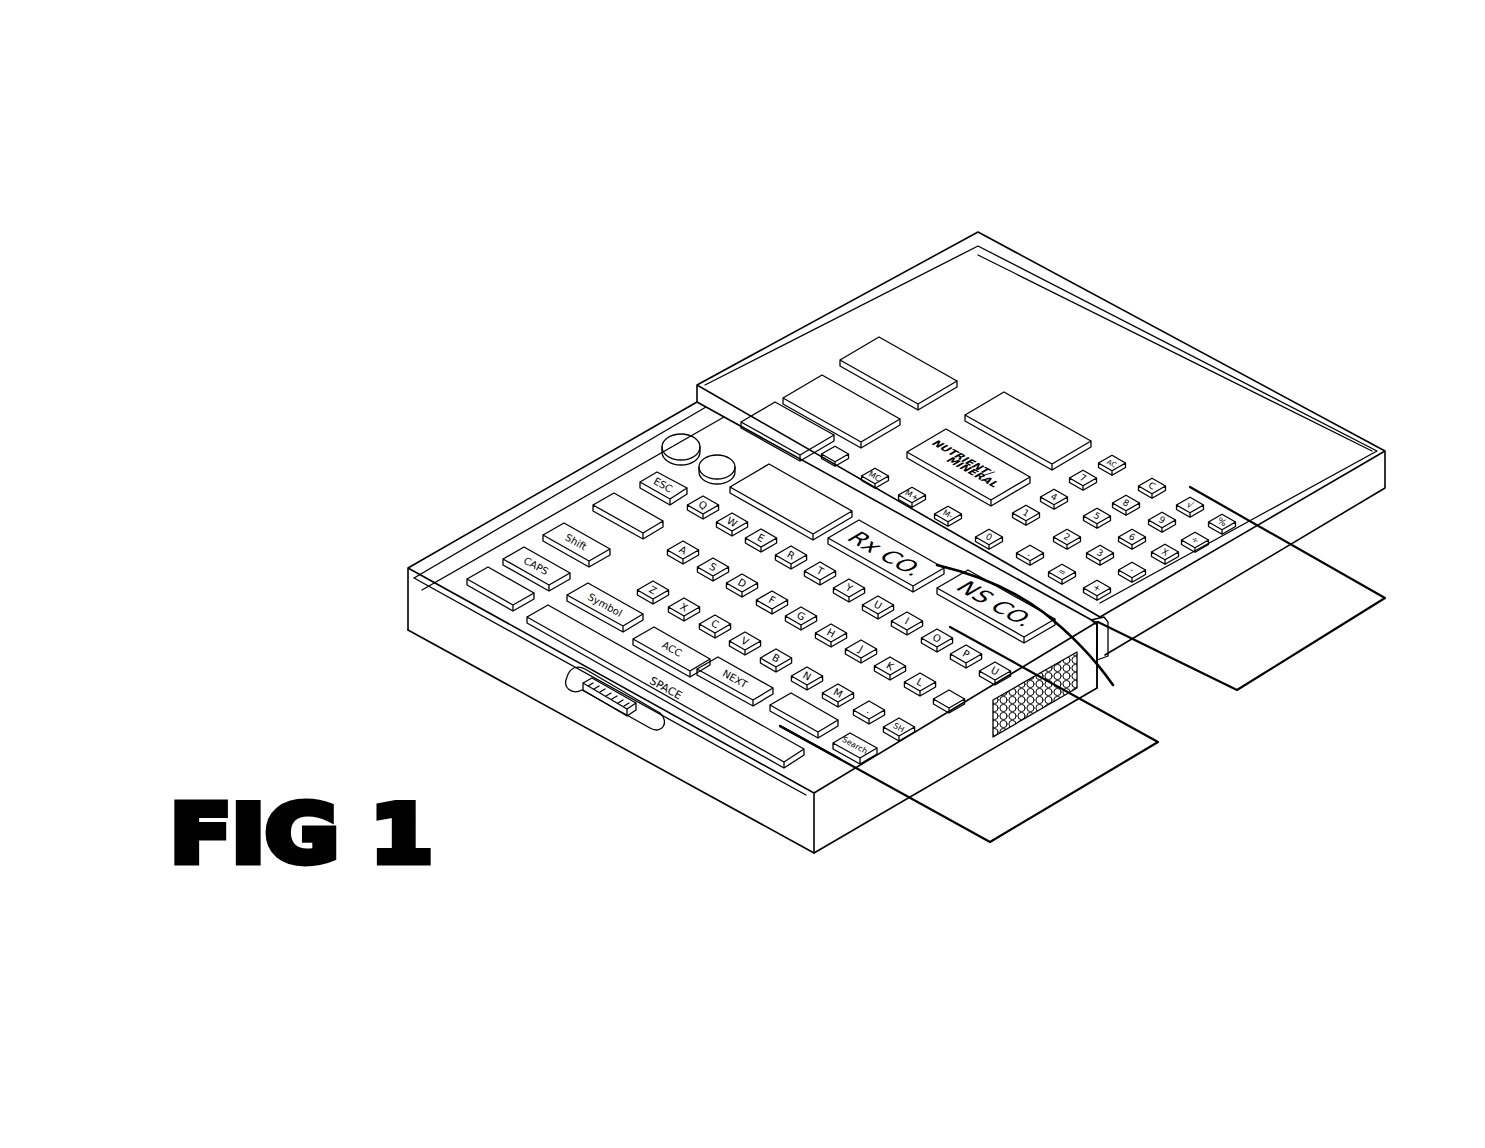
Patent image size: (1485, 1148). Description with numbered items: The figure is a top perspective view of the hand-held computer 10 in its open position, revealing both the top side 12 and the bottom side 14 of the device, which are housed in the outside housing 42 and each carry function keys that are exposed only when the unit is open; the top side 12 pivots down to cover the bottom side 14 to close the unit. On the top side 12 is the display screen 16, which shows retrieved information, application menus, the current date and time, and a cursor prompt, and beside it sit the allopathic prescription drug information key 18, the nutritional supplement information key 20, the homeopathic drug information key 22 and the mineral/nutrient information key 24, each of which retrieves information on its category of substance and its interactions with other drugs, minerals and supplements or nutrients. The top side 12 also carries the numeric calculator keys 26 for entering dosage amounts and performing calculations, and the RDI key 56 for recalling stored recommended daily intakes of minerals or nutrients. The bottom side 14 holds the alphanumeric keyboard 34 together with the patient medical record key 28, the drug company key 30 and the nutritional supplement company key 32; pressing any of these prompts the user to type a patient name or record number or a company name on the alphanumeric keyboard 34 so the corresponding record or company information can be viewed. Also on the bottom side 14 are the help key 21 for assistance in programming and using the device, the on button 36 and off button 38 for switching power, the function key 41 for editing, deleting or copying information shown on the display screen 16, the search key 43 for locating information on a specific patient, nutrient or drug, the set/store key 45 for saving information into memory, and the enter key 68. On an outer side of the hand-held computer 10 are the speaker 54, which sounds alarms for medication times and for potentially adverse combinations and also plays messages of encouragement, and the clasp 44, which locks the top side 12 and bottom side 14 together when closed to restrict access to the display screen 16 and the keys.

The hand-held computer 10 is at (638, 272).
The top side 12 is at (1295, 467).
The bottom side 14 is at (457, 575).
The display screen 16 is at (1243, 412).
The allopathic prescription drug information key 18 is at (863, 350).
The nutritional supplement information key 20 is at (1000, 410).
The help key 21 is at (483, 577).
The homeopathic drug information key 22 is at (813, 385).
The mineral/nutrient information key 24 is at (875, 447).
The numeric calculator keys 26 is at (1322, 640).
The patient medical record key 28 is at (758, 474).
The drug company key 30 is at (1092, 622).
The nutritional supplement company key 32 is at (1050, 644).
The alphanumeric keyboard 34 is at (1080, 778).
The on button 36 is at (705, 473).
The off button 38 is at (663, 449).
The function key 41 is at (603, 500).
The outside housing 42 is at (730, 773).
The search key 43 is at (783, 727).
The clasp 44 is at (617, 720).
The set/store key 45 is at (803, 727).
The speaker 54 is at (1041, 716).
The RDI key 56 is at (762, 408).
The enter key 68 is at (962, 697).